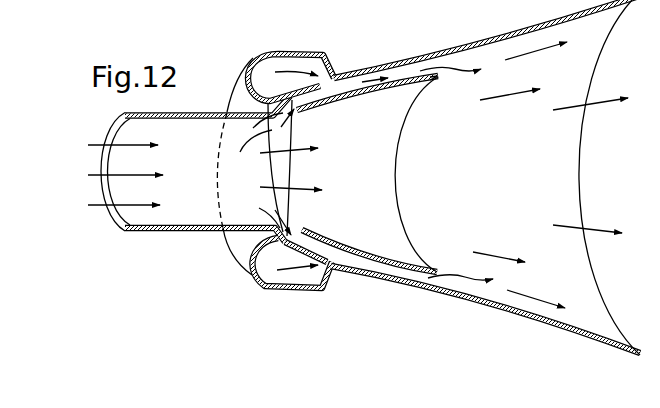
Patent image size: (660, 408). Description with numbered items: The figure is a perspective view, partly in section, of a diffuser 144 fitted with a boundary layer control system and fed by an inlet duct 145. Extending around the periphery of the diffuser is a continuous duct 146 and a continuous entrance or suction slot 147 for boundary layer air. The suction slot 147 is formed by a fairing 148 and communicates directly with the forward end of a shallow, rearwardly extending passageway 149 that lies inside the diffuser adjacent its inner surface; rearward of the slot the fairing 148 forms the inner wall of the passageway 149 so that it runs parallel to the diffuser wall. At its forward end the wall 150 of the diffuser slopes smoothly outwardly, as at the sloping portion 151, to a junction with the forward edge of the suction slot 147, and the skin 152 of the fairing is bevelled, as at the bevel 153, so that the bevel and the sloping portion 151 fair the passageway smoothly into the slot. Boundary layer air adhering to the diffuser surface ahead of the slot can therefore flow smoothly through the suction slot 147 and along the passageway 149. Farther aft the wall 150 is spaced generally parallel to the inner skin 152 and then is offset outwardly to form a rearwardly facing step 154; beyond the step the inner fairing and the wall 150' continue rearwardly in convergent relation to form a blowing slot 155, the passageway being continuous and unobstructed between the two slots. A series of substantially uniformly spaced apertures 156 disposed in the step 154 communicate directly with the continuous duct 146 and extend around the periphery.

The diffuser 144 is at (564, 154).
The inlet duct 145 is at (163, 231).
The continuous duct 146 is at (303, 52).
The suction slot 147 is at (272, 208).
The fairing 148 is at (394, 156).
The passageway 149 is at (335, 251).
The wall 150 is at (367, 101).
The wall 150' is at (485, 39).
The sloping portion 151 is at (274, 233).
The skin 152 is at (388, 88).
The bevel 153 is at (301, 114).
The step 154 is at (338, 73).
The blowing slot 155 is at (441, 72).
The apertures 156 is at (338, 278).